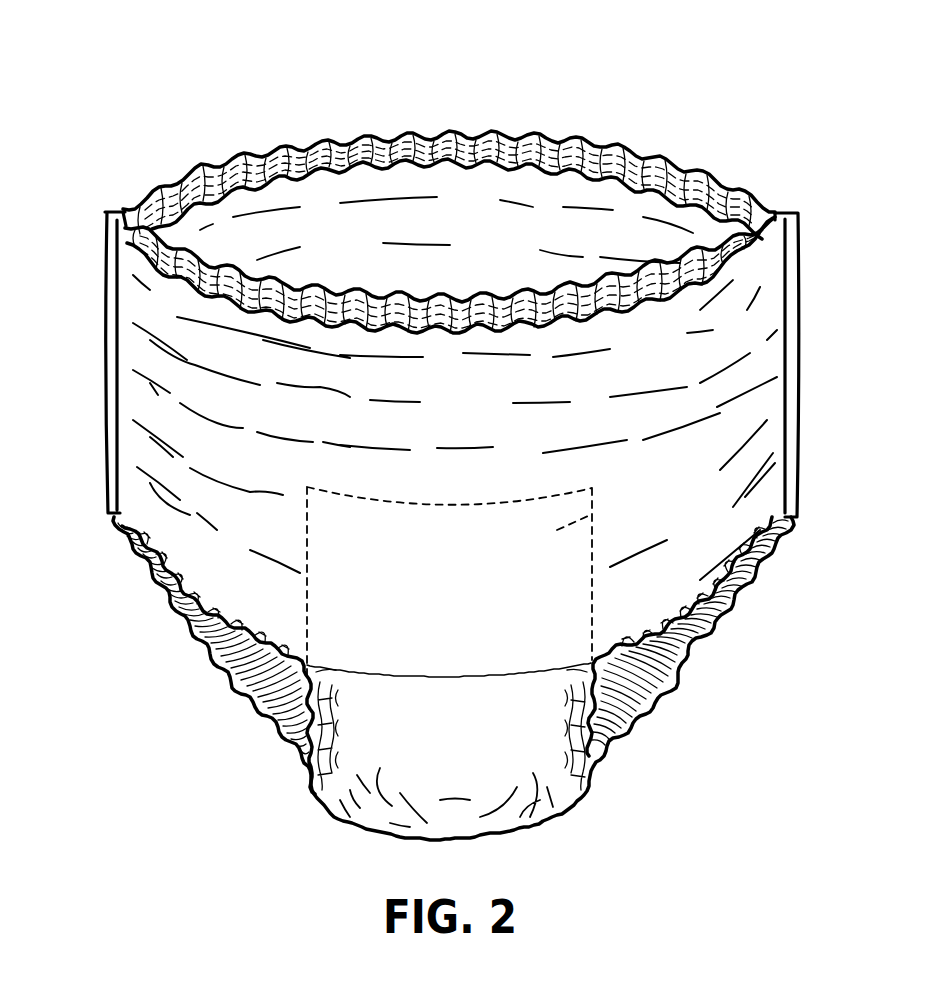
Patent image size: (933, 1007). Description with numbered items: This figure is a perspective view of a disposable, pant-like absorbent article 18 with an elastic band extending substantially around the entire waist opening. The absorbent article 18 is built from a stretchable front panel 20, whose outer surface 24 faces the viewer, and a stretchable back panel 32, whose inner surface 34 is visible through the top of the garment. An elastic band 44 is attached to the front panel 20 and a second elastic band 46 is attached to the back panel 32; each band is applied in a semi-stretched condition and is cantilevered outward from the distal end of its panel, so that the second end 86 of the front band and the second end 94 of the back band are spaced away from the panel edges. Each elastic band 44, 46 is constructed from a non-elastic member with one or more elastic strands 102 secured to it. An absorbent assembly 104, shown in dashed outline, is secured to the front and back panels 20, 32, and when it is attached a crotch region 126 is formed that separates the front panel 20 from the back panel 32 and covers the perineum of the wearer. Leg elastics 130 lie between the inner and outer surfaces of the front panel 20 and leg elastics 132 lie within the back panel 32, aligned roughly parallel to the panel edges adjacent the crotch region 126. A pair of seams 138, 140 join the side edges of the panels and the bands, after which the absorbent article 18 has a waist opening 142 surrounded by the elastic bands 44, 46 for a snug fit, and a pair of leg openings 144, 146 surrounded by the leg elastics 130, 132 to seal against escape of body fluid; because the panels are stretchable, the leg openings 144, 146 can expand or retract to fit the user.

The absorbent article 18 is at (803, 82).
The front panel 20 is at (763, 442).
The outer surface 24 is at (470, 420).
The back panel 32 is at (705, 240).
The inner surface 34 is at (617, 246).
The elastic band 44 is at (314, 306).
The elastic band 46 is at (340, 150).
The second end 86 is at (496, 286).
The second end 94 is at (453, 128).
The elastic strands 102 is at (289, 152).
The absorbent assembly 104 is at (604, 507).
The crotch region 126 is at (514, 816).
The leg elastics 130 is at (198, 588).
The leg elastics 132 is at (230, 683).
The seam 138 is at (112, 350).
The seam 140 is at (792, 313).
The waist opening 142 is at (591, 138).
The leg opening 144 is at (286, 677).
The leg opening 146 is at (660, 647).